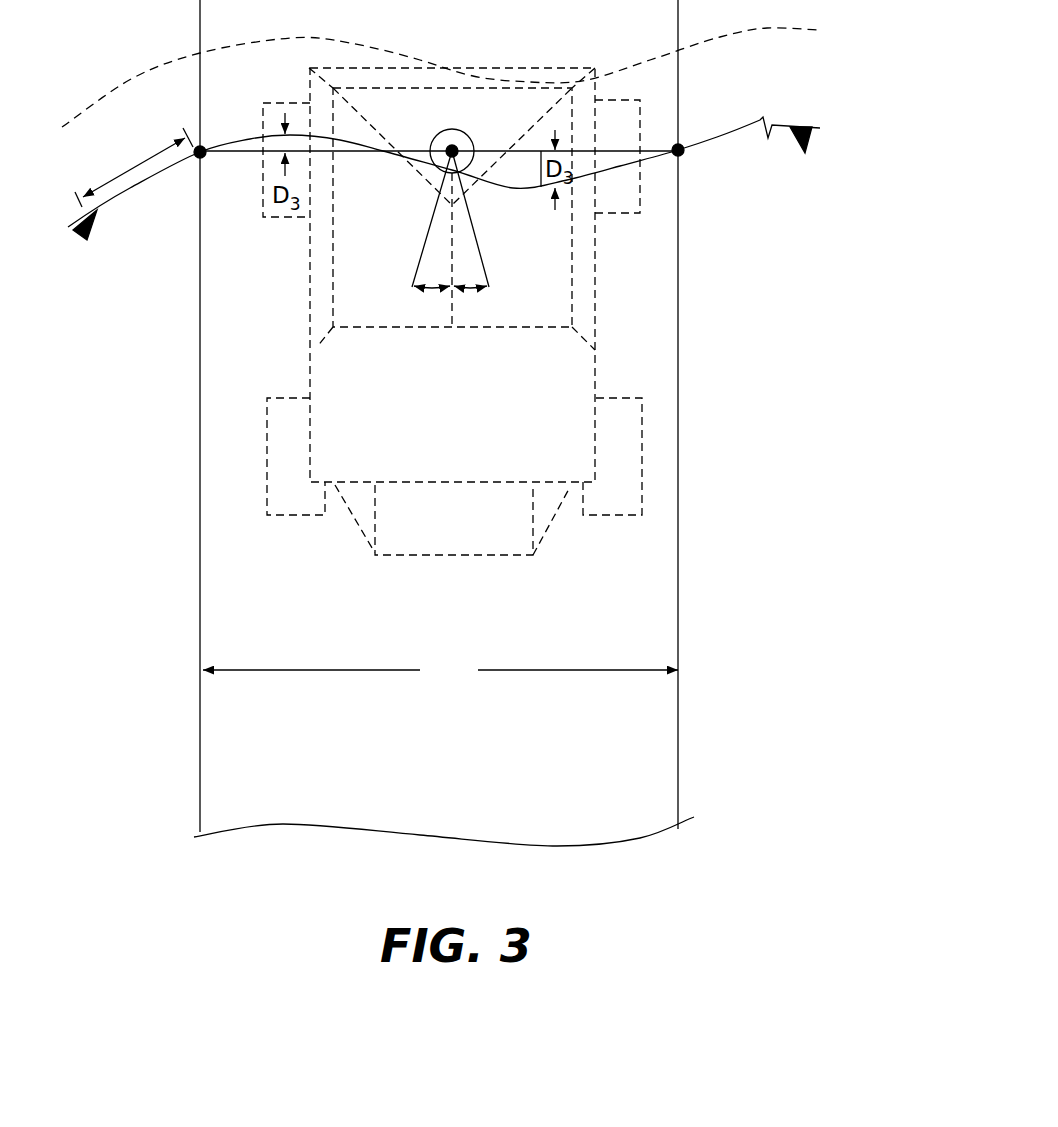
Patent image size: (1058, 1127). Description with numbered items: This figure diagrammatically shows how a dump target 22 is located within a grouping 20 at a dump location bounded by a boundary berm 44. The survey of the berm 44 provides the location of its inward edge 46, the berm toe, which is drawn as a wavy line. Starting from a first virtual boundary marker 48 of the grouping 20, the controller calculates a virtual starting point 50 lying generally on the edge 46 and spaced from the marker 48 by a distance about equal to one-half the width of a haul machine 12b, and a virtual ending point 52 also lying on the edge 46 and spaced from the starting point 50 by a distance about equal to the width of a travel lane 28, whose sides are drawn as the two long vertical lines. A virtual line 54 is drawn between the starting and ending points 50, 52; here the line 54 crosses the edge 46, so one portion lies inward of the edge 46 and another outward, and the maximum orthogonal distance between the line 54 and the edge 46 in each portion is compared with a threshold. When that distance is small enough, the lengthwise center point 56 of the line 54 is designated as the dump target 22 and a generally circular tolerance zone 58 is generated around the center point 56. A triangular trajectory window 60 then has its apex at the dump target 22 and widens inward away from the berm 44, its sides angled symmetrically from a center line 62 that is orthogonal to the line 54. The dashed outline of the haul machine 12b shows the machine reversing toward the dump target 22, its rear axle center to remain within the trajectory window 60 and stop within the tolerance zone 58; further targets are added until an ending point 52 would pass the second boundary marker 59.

The haul machine 12b is at (360, 533).
The grouping 20 is at (738, 867).
The dump target 22 is at (457, 100).
The travel lane 28 is at (455, 756).
The boundary berm 44 is at (755, 87).
The inward edge 46 is at (717, 137).
The first virtual boundary marker 48 is at (82, 233).
The virtual starting point 50 is at (197, 155).
The virtual ending point 52 is at (683, 152).
The virtual line 54 is at (237, 153).
The lengthwise center point 56 is at (453, 145).
The tolerance zone 58 is at (433, 137).
The second boundary marker 59 is at (797, 143).
The trajectory window 60 is at (482, 263).
The center line 62 is at (452, 315).